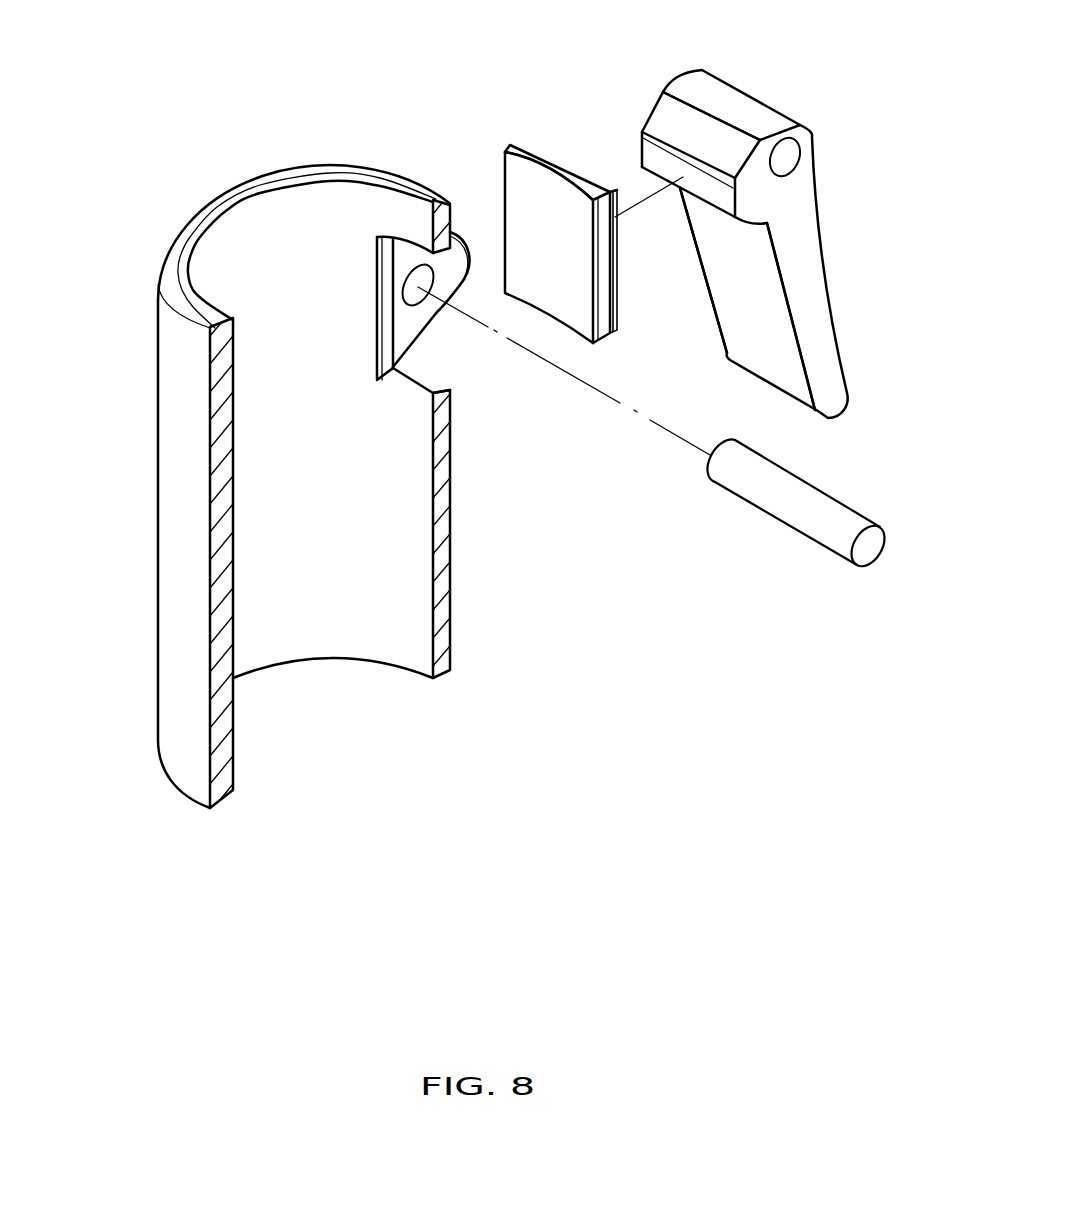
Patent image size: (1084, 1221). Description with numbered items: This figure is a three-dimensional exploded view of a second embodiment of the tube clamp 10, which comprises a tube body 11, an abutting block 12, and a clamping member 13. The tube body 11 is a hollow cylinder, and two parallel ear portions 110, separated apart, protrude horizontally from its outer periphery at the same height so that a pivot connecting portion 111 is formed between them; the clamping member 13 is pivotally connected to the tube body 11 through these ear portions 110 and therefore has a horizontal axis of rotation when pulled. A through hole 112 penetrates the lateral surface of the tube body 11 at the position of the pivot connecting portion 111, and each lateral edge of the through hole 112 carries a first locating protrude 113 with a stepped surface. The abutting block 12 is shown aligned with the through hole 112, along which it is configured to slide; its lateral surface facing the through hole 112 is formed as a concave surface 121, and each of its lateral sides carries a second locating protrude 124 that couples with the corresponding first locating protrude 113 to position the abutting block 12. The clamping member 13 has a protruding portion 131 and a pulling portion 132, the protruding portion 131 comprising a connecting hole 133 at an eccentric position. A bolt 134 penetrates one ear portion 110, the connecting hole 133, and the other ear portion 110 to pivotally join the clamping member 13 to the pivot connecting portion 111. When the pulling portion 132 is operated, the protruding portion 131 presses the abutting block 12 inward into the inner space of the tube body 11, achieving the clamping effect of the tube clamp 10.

The tube clamp 10 is at (158, 214).
The tube body 11 is at (248, 187).
The ear portions 110 is at (460, 243).
The pivot connecting portion 111 is at (407, 315).
The through hole 112 is at (388, 343).
The first locating protrude 113 is at (383, 282).
The abutting block 12 is at (568, 172).
The concave surface 121 is at (530, 165).
The second locating protrude 124 is at (617, 316).
The clamping member 13 is at (802, 247).
The protruding portion 131 is at (670, 148).
The pulling portion 132 is at (823, 373).
The connecting hole 133 is at (780, 150).
The bolt 134 is at (785, 493).